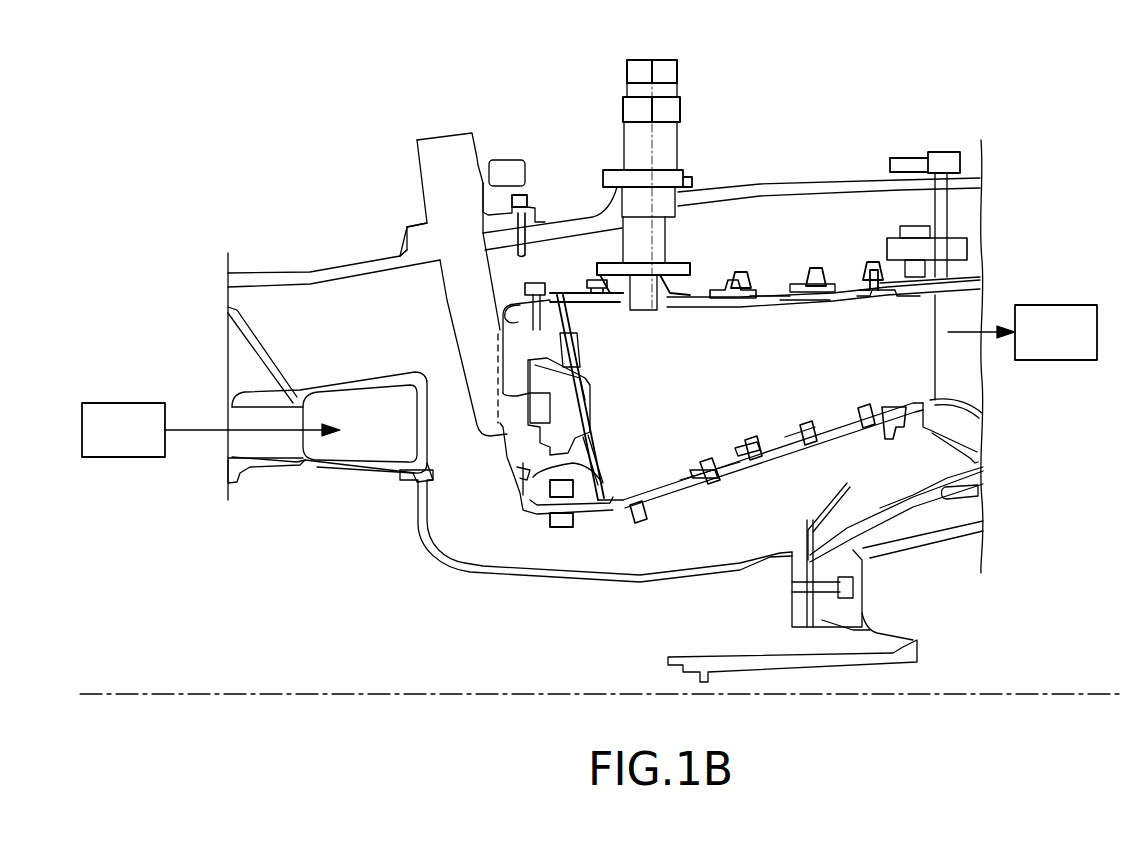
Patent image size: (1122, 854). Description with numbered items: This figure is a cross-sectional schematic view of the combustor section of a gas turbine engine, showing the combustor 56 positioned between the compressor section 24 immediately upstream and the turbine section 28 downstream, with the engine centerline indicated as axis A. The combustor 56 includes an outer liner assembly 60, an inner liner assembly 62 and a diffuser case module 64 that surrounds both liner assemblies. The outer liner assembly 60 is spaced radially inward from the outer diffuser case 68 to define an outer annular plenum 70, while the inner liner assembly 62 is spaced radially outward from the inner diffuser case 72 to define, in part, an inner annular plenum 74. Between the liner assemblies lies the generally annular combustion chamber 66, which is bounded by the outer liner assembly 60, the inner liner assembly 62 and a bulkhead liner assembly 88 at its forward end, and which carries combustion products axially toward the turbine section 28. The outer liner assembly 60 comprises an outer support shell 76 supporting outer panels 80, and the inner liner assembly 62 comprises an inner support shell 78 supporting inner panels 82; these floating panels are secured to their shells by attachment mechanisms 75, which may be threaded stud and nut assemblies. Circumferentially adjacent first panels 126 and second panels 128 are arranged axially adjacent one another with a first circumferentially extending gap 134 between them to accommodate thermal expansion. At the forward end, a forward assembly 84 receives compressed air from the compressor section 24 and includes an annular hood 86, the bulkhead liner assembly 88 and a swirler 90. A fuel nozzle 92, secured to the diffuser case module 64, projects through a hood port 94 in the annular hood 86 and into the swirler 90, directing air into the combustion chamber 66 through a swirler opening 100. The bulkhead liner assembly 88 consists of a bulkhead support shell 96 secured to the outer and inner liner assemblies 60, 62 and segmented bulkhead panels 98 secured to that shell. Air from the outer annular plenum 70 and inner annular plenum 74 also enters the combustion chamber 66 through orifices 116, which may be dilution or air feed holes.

The compressor section 24 is at (211, 430).
The turbine section 28 is at (1022, 332).
The combustor 56 is at (878, 118).
The outer liner assembly 60 is at (790, 286).
The inner liner assembly 62 is at (743, 473).
The diffuser case module 64 is at (830, 186).
The combustion chamber 66 is at (797, 363).
The outer diffuser case 68 is at (705, 193).
The outer annular plenum 70 is at (711, 233).
The inner diffuser case 72 is at (573, 576).
The inner annular plenum 74 is at (603, 484).
The attachment mechanism 75 is at (897, 423).
The outer support shell 76 is at (327, 268).
The inner support shell 78 is at (820, 440).
The outer panel 80 is at (381, 256).
The inner panel 82 is at (680, 478).
The forward assembly 84 is at (520, 520).
The annular hood 86 is at (523, 475).
The bulkhead liner assembly 88 is at (582, 347).
The swirler 90 is at (590, 425).
The fuel nozzle 92 is at (511, 284).
The hood port 94 is at (513, 463).
The bulkhead support shell 96 is at (520, 498).
The bulkhead panel 98 is at (592, 462).
The swirler opening 100 is at (587, 395).
The orifice 116 is at (783, 300).
The first panel 126 is at (697, 307).
The second panel 128 is at (830, 301).
The first circumferentially extending gap 134 is at (717, 307).
The engine central axis A is at (1055, 697).